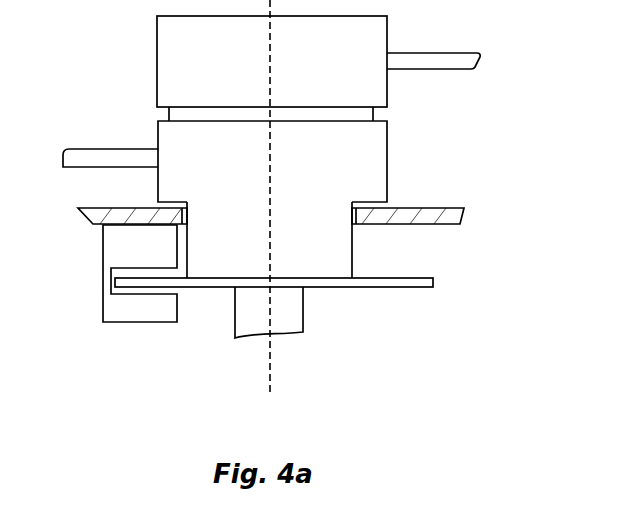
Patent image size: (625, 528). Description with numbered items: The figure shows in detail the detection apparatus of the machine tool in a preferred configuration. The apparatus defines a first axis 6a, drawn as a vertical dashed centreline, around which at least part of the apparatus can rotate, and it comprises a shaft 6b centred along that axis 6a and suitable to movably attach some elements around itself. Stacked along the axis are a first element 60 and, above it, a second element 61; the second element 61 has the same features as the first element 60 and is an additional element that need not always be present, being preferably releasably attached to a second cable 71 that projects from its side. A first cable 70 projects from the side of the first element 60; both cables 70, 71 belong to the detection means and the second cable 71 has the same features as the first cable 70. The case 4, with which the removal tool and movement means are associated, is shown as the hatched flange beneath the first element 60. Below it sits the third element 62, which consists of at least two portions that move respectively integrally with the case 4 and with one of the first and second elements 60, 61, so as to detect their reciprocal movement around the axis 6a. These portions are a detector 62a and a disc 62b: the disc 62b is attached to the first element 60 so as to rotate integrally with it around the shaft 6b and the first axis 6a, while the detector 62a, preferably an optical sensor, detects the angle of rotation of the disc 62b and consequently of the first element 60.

The case 4 is at (398, 207).
The first axis 6a is at (270, 357).
The shaft 6b is at (303, 309).
The first element 60 is at (272, 154).
The second element 61 is at (272, 61).
The third element 62 is at (131, 335).
The detector 62a is at (140, 273).
The disc 62b is at (377, 278).
The first cable 70 is at (110, 169).
The second cable 71 is at (428, 70).